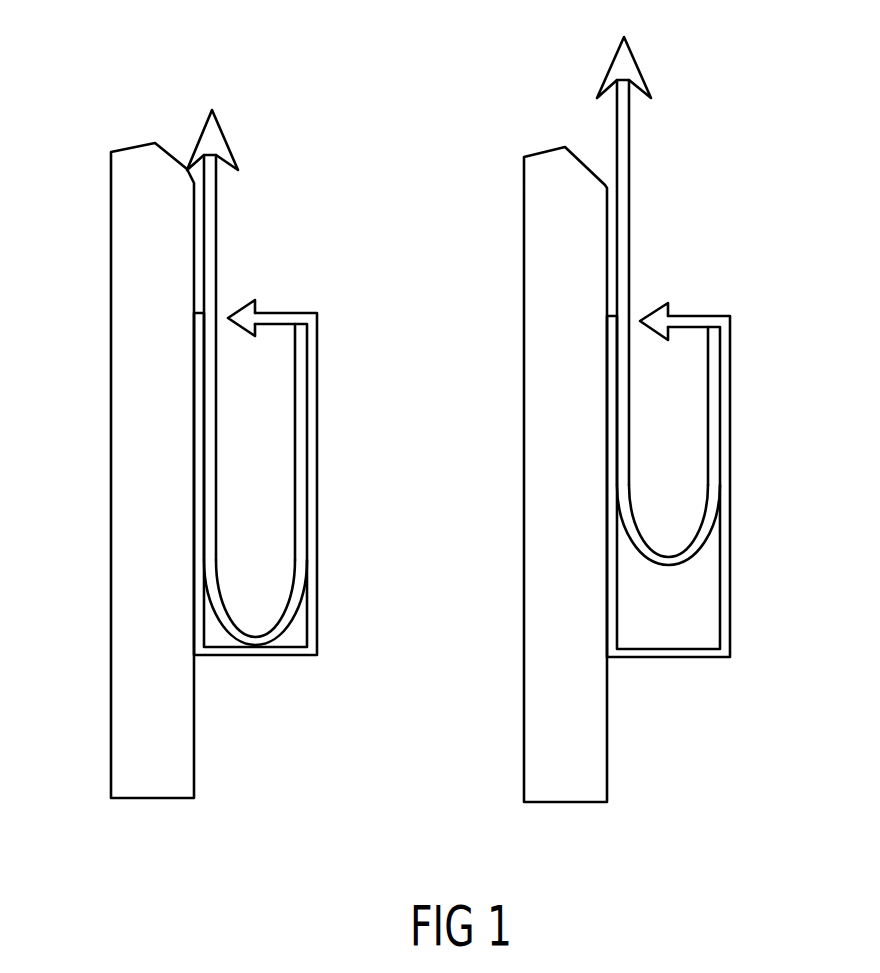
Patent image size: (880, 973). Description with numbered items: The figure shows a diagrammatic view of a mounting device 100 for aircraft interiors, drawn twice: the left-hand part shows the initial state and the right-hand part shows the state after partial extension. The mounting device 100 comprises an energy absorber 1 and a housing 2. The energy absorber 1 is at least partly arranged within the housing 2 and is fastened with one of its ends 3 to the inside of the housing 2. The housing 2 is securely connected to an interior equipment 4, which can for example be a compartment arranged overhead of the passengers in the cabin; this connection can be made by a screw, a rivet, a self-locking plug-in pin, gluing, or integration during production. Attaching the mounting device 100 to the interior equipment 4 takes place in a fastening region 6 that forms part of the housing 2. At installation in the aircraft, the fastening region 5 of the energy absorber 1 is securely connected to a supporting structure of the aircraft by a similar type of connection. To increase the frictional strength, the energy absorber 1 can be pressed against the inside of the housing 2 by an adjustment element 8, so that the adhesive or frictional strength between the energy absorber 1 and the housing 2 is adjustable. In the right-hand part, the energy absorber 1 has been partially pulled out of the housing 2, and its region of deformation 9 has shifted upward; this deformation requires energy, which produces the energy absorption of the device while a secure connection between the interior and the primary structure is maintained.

The energy absorber 1 is at (663, 190).
The housing 2 is at (287, 657).
The end of the energy absorber 3 is at (298, 328).
The interior equipment 4 is at (123, 568).
The fastening region of the energy absorber 5 is at (220, 132).
The fastening region 6 is at (205, 633).
The adjustment element 8 is at (250, 300).
The region of deformation 9 is at (290, 622).
The mounting device 100 is at (464, 419).